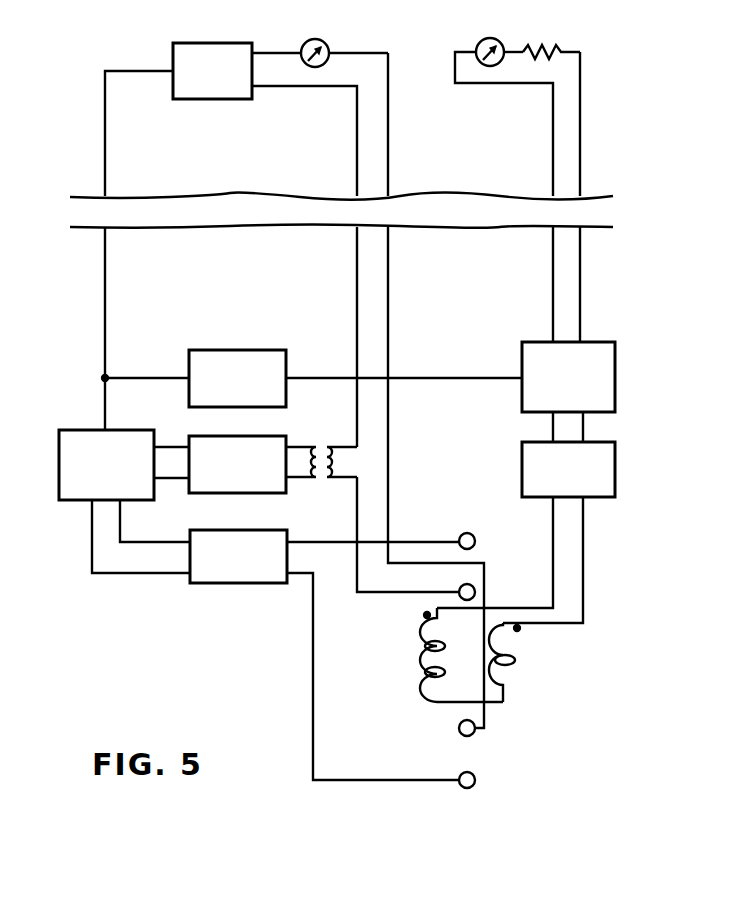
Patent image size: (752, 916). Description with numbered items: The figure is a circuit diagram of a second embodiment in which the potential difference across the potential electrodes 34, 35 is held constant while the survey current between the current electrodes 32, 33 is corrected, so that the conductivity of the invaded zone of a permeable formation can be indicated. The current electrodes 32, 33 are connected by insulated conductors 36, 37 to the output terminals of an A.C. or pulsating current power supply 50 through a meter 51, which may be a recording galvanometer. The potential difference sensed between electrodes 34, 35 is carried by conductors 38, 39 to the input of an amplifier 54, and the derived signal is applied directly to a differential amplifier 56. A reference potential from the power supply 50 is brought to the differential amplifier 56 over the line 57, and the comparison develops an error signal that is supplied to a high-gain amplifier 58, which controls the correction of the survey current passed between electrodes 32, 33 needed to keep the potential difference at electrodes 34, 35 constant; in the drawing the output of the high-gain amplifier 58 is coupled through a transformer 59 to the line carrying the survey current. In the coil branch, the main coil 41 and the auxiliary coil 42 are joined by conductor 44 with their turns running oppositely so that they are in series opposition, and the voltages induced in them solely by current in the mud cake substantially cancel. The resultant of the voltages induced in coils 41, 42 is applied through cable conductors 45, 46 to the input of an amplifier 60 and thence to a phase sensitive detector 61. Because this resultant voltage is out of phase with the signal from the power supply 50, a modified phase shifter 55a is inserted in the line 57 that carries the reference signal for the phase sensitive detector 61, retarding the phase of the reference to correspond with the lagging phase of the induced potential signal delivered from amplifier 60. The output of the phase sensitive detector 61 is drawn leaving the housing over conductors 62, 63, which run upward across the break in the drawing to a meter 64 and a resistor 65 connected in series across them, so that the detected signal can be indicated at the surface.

The power supply 50 is at (222, 43).
The meter 51 is at (322, 42).
The conductor 57 is at (105, 133).
The insulated conductor 36 is at (357, 133).
The insulated conductor 37 is at (390, 133).
The meter 64 is at (486, 40).
The resistor 65 is at (557, 47).
The conductor 62 is at (553, 133).
The conductor 63 is at (583, 133).
The phase shifter 55a is at (226, 350).
The differential amplifier 56 is at (77, 433).
The high-gain amplifier 58 is at (262, 491).
The transformer 59 is at (318, 446).
The phase sensitive detector 61 is at (599, 343).
The amplifier 60 is at (600, 491).
The amplifier 54 is at (227, 583).
The insulated conductor 38 is at (313, 545).
The electrode 34 is at (472, 535).
The electrode 32 is at (461, 588).
The insulated conductor 39 is at (313, 647).
The electrode 35 is at (478, 786).
The electrode 33 is at (462, 737).
The cable conductor 45 is at (508, 609).
The cable conductor 46 is at (588, 594).
The main coil 41 is at (420, 661).
The auxiliary coil 42 is at (521, 667).
The conductor 44 is at (460, 704).